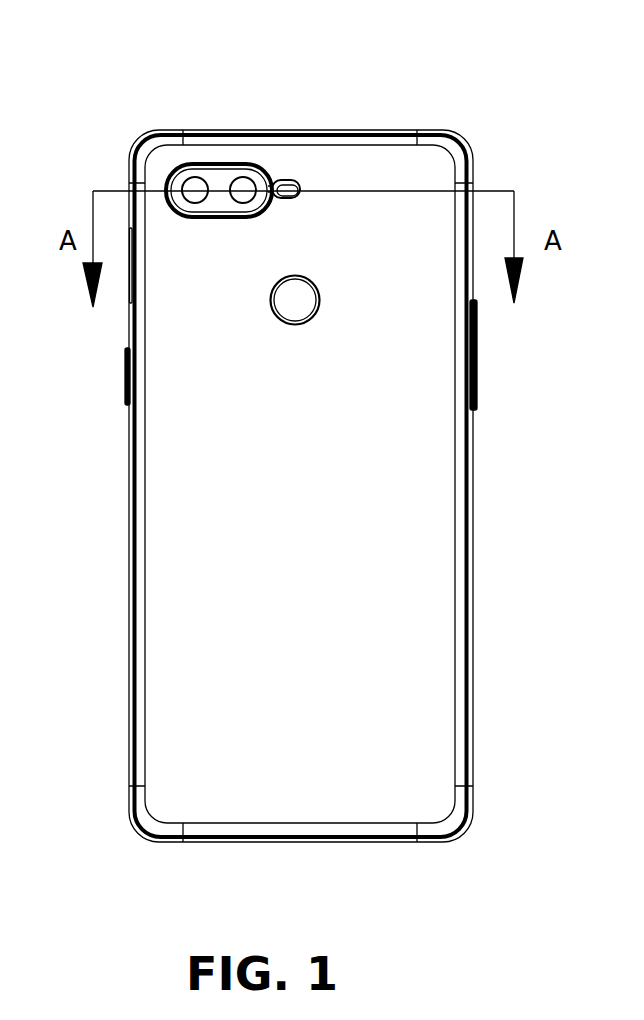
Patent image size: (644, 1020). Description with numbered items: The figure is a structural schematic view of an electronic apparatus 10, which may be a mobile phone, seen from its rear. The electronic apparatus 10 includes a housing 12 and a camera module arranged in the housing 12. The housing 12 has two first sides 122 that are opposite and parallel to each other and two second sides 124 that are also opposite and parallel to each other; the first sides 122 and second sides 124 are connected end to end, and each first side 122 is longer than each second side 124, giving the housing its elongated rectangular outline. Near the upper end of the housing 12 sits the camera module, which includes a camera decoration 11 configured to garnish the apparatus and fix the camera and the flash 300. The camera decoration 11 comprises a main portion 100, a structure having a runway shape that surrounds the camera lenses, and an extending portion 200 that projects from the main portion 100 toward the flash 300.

The electronic apparatus 10 is at (125, 37).
The camera decoration 11 is at (317, 66).
The housing 12 is at (403, 487).
The main portion 100 is at (217, 183).
The extending portion 200 is at (287, 188).
The flash 300 is at (287, 185).
The first sides 122 is at (129, 602).
The second sides 124 is at (395, 130).